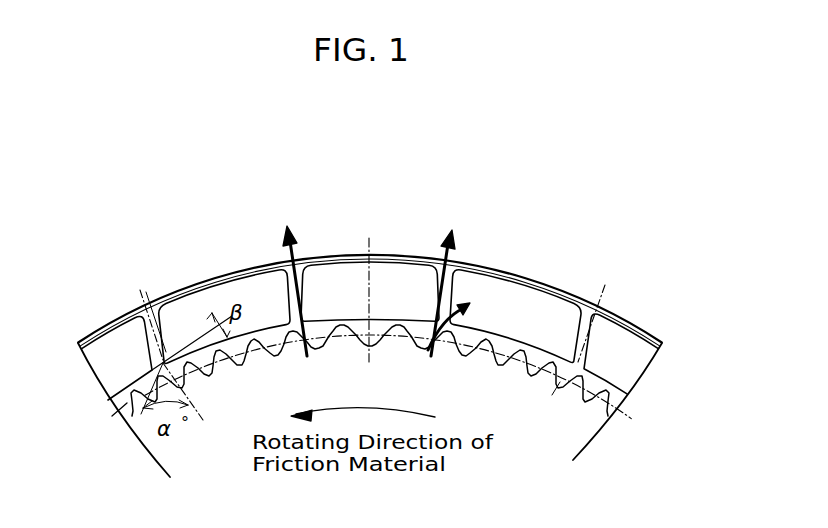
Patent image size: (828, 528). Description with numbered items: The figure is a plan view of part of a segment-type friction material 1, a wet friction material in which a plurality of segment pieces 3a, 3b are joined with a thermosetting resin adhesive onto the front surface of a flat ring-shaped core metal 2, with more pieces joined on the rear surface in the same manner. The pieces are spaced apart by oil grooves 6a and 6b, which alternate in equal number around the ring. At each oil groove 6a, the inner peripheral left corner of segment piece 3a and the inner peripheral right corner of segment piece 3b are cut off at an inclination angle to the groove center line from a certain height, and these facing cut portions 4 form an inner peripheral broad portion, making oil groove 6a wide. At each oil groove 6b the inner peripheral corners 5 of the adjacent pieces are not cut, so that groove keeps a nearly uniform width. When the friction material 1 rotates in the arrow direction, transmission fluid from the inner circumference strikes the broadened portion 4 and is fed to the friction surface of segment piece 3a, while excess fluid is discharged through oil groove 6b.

The segment-type friction material 1 is at (559, 237).
The core metal 2 is at (182, 288).
The segment piece 3a is at (229, 287).
The segment piece 3b is at (113, 338).
The cut portion 4 is at (405, 343).
The inner peripheral corner 5 is at (283, 353).
The oil groove 6a is at (148, 305).
The oil groove 6b is at (292, 283).